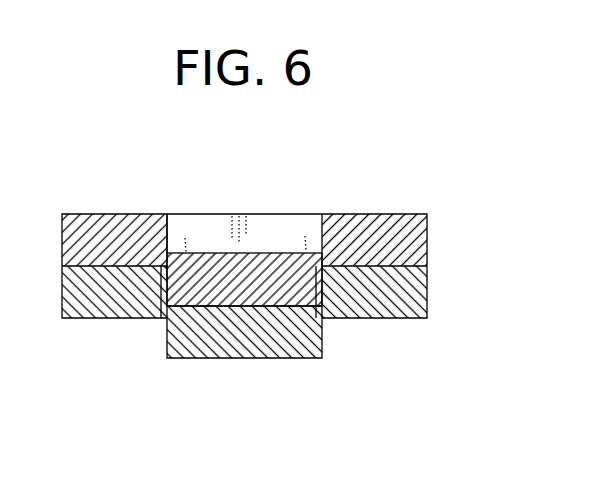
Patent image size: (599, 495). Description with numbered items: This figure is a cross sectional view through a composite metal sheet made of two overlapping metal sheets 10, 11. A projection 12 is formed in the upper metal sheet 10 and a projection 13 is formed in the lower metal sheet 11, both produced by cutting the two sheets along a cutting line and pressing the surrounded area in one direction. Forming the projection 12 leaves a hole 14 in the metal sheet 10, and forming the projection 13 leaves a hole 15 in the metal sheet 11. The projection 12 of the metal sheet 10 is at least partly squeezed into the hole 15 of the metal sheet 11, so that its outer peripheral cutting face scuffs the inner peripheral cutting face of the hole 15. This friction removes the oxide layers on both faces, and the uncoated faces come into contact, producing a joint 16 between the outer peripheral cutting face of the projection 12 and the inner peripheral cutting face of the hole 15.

The metal sheet 10 is at (418, 215).
The metal sheet 11 is at (427, 303).
The projection 12 is at (270, 253).
The projection 13 is at (250, 350).
The hole 14 is at (182, 238).
The hole 15 is at (192, 253).
The joint 16 is at (143, 318).